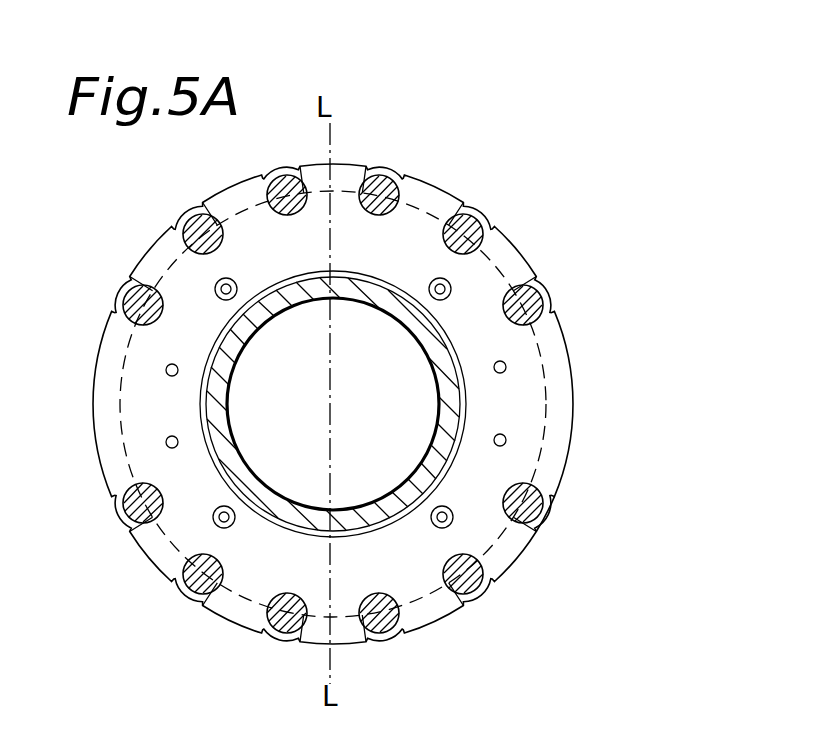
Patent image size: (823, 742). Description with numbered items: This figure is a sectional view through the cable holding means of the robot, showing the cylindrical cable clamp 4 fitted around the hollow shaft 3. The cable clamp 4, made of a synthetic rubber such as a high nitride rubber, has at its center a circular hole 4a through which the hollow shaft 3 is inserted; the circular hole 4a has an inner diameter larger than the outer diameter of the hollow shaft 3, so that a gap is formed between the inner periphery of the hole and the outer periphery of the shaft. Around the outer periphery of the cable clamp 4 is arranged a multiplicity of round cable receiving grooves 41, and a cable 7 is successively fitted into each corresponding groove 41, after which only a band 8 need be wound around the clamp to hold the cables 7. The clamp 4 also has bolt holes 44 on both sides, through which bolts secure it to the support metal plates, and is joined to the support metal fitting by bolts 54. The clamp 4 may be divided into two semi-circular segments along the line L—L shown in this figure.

The hollow shaft 3 is at (227, 395).
The cable clamp 4 is at (451, 182).
The circular hole 4a is at (256, 453).
The cable 7 is at (468, 597).
The band 8 is at (543, 521).
The cable receiving groove 41 is at (366, 642).
The bolt hole 44 is at (166, 371).
The bolt 54 is at (449, 282).